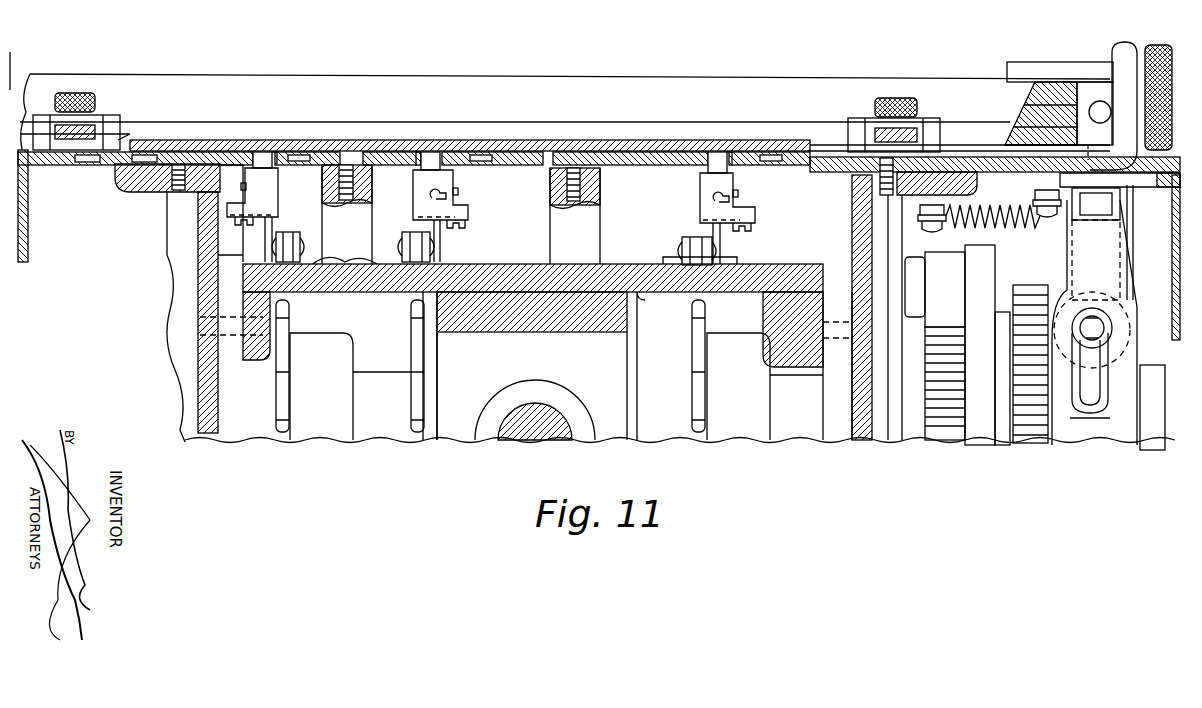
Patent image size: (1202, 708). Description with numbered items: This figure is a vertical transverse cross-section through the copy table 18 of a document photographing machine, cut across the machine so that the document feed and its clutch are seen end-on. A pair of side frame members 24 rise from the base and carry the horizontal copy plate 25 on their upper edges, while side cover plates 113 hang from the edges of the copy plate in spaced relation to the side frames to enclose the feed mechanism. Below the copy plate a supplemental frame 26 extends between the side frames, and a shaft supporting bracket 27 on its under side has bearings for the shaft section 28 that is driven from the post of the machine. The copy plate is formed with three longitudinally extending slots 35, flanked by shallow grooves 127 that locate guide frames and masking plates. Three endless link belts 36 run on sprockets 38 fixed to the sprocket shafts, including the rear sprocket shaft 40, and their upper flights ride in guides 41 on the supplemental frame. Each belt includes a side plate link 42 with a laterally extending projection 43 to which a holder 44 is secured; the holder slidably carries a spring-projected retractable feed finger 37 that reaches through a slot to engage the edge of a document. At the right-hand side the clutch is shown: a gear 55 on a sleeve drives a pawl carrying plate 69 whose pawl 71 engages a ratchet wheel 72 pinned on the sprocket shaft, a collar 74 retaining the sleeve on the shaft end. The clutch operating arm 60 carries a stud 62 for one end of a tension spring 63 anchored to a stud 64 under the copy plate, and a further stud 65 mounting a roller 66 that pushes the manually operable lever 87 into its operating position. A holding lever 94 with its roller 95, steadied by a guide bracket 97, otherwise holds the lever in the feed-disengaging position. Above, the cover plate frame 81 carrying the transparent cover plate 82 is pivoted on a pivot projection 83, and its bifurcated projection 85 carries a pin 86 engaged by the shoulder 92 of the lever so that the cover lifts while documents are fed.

The copy table 18 is at (176, 226).
The side frame members 24 is at (167, 255).
The copy plate 25 is at (80, 165).
The supplemental frame 26 is at (778, 275).
The shaft supporting bracket 27 is at (565, 352).
The shaft section 28 is at (545, 420).
The longitudinally extending slots 35 is at (262, 152).
The endless link belts 36 is at (296, 229).
The retractable feed fingers 37 is at (270, 160).
The sprockets 38 is at (287, 325).
The sprocket shaft 40 is at (372, 380).
The guides 41 is at (352, 248).
The side plate link 42 is at (265, 236).
The laterally extending projection 43 is at (268, 215).
The holder 44 is at (270, 182).
The gear 55 is at (1030, 292).
The clutch operating arm 60 is at (1135, 300).
The stud 62 is at (1120, 258).
The tension spring 63 is at (1020, 215).
The stud 64 is at (989, 220).
The stud 65 is at (1090, 328).
The roller 66 is at (1103, 345).
The pawl carrying plate 69 is at (985, 268).
The pawl 71 is at (945, 289).
The ratchet wheel 72 is at (945, 335).
The collar 74 is at (1150, 375).
The cover plate frame 81 is at (515, 102).
The transparent cover plate 82 is at (575, 140).
The pivot projection 83 is at (1155, 48).
The bifurcated projection 85 is at (1090, 85).
The pin 86 is at (1090, 112).
The manually operable lever 87 is at (1095, 426).
The shoulder 92 is at (1010, 128).
The holding lever 94 is at (972, 178).
The roller 95 is at (1120, 240).
The guide bracket 97 is at (1138, 195).
The side cover plates 113 is at (28, 185).
The shallow grooves 127 is at (203, 152).